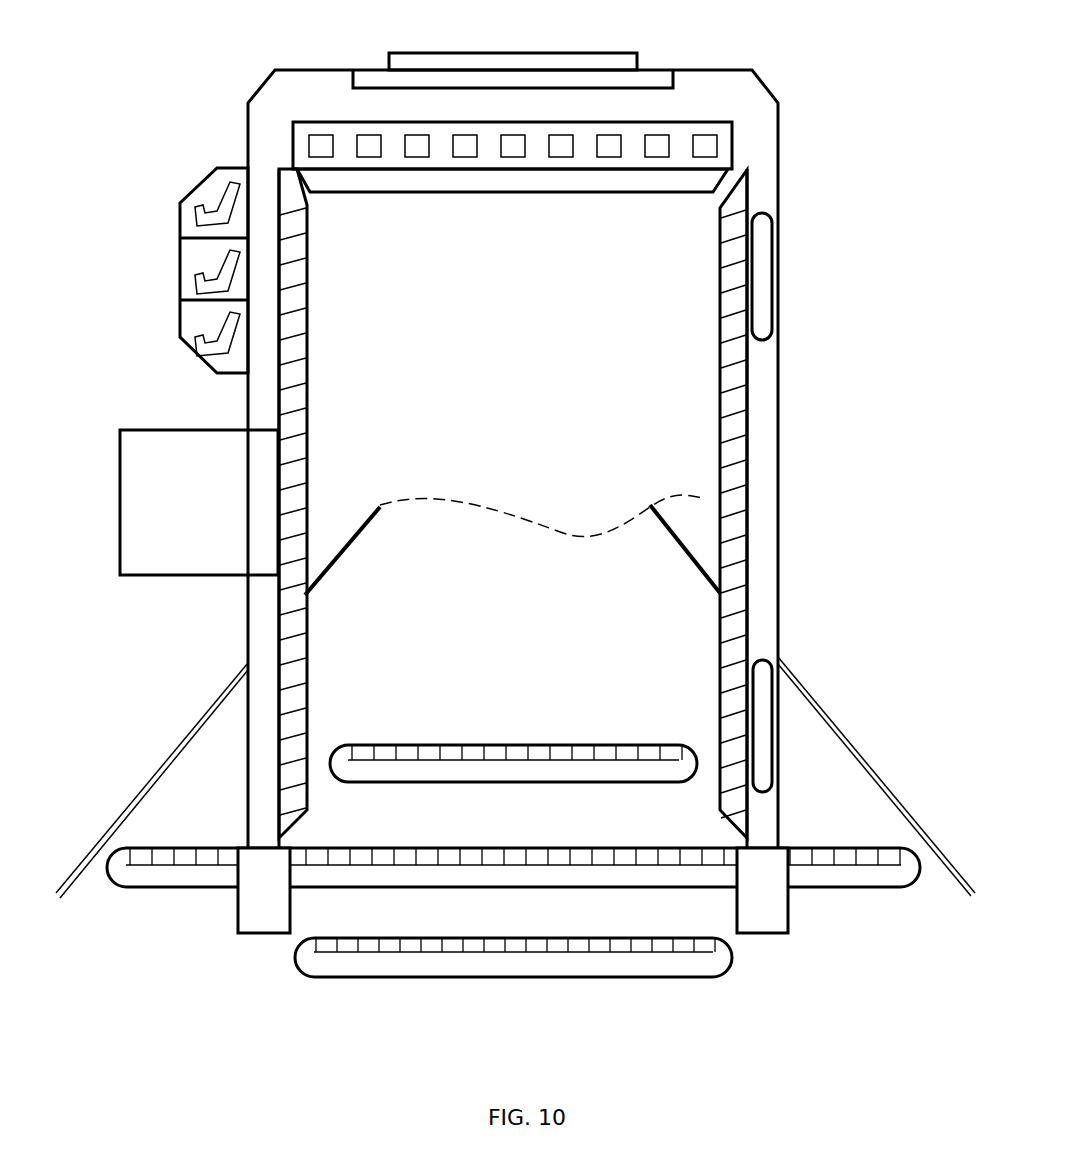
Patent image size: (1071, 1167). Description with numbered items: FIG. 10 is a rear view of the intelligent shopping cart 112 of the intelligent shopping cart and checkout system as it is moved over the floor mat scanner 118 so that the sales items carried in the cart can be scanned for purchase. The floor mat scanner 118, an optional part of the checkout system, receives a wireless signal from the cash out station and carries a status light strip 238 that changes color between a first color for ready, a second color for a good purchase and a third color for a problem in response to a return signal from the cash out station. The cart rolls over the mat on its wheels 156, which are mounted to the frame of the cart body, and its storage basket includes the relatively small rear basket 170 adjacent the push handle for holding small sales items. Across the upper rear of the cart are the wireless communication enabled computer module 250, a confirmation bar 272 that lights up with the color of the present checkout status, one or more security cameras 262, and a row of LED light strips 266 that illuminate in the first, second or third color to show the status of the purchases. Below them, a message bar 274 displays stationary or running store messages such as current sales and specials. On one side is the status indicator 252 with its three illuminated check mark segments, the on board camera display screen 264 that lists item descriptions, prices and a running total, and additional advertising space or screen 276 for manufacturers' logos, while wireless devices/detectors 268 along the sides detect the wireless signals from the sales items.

The intelligent shopping cart 112 is at (150, 142).
The floor mat scanner 118 is at (480, 788).
The wheels 156 is at (265, 912).
The rear basket 170 is at (512, 496).
The status light strip 238 is at (520, 745).
The wireless communication enabled computer module 250 is at (527, 53).
The status indicator 252 is at (170, 282).
The security cameras 262 is at (695, 90).
The on board camera display screen 264 is at (167, 507).
The LED light strips 266 is at (690, 131).
The wireless devices/detectors 268 is at (735, 405).
The confirmation bar 272 is at (612, 80).
The message bar 274 is at (514, 185).
The additional advertising screen 276 is at (268, 158).